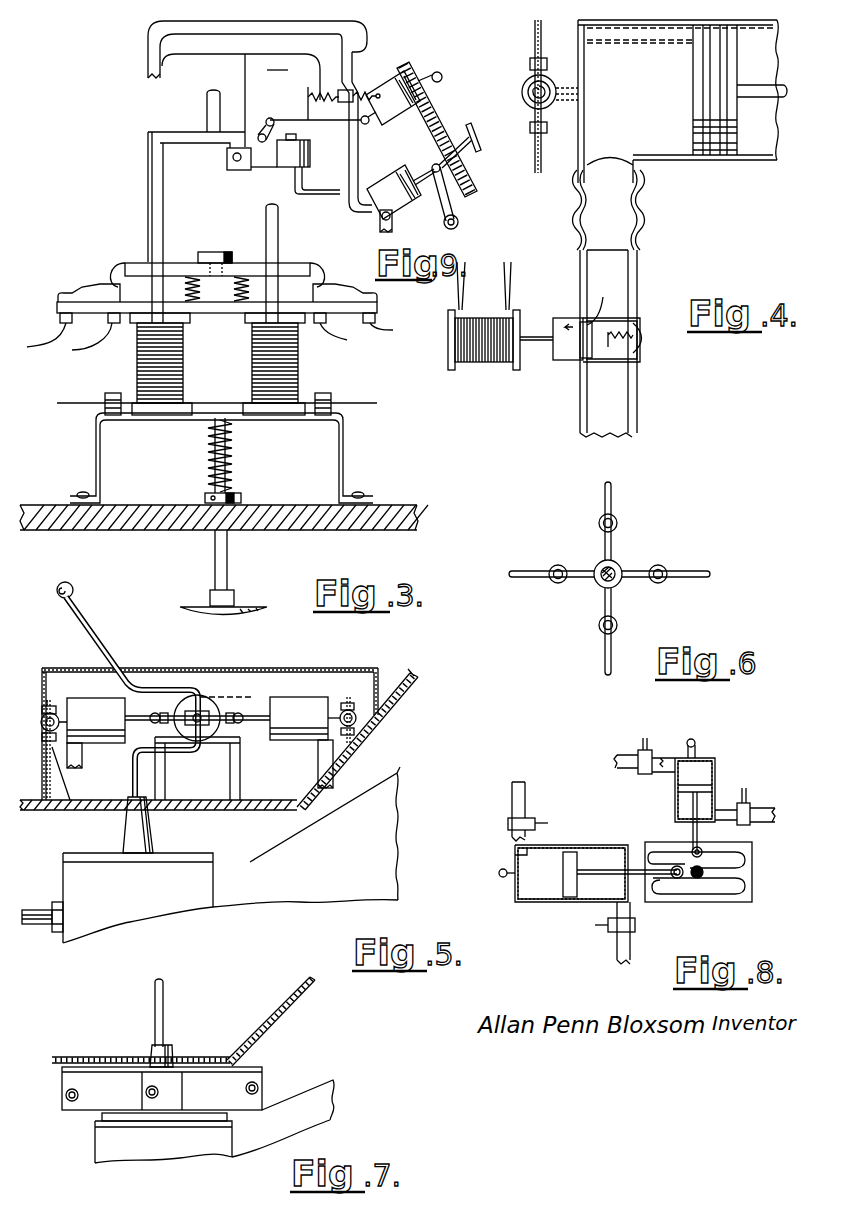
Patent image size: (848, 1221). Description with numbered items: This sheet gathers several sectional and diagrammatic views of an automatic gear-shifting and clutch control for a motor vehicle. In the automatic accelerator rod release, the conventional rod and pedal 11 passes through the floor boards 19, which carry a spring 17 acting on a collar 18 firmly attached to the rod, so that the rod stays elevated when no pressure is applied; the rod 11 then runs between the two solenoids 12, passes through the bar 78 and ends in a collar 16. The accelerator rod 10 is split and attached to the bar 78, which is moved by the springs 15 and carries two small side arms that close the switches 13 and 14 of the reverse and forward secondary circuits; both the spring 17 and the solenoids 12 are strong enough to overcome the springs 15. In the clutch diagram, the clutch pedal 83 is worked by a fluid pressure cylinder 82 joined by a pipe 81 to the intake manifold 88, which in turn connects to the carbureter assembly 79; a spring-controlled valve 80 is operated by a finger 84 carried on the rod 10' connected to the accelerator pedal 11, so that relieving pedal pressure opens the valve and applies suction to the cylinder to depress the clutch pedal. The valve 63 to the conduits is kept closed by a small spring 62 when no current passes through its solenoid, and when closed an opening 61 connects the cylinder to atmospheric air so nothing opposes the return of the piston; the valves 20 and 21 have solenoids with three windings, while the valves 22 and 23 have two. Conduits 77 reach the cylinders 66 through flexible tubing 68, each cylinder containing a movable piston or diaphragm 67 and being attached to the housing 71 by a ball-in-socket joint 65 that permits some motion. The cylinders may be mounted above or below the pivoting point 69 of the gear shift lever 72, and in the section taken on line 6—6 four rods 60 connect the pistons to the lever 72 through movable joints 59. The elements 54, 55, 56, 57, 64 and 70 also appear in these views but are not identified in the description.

In FIG. 5, the section line 6 is at (253, 697).
In FIG. 3, the accelerator rod 10 is at (190, 111).
In FIG. 9, the accelerator rod 10 is at (393, 98).
In FIG. 9, the rod 10' is at (317, 129).
In FIG. 3, the accelerator pedal 11 is at (228, 567).
In FIG. 9, the accelerator pedal 11 is at (420, 72).
In FIG. 3, the solenoid 12 is at (137, 365).
In FIG. 3, the switch 13 is at (99, 287).
In FIG. 3, the switch 14 is at (333, 287).
In FIG. 3, the spring 15 is at (186, 290).
In FIG. 3, the collar 16 is at (218, 253).
In FIG. 3, the spring 17 is at (233, 455).
In FIG. 3, the collar 18 is at (240, 495).
In FIG. 3, the floor boards 19 is at (418, 504).
In FIG. 5, the floor boards 19 is at (409, 685).
In FIG. 7, the floor boards 19 is at (183, 1021).
In FIG. 8, the valve 20 is at (527, 820).
In FIG. 8, the valve 21 is at (613, 935).
In FIG. 8, the valve 22 is at (750, 808).
In FIG. 8, the valve 23 is at (638, 755).
In FIG. 8, the cylinder 54 is at (563, 873).
In FIG. 5, the cylinder 54 is at (301, 742).
In FIG. 8, the cylinder 55 is at (695, 780).
In FIG. 8, the piston 56 is at (695, 821).
In FIG. 8, the piston 57 is at (620, 874).
In FIG. 5, the piston 57 is at (96, 733).
In FIG. 6, the movable joint 59 is at (620, 523).
In FIG. 6, the rod 60 is at (612, 493).
In FIG. 4, the opening 61 is at (567, 320).
In FIG. 4, the spring 62 is at (641, 340).
In FIG. 4, the valve 63 is at (592, 350).
In FIG. 4, the coil 64 is at (498, 370).
In FIG. 4, the joint 65 is at (556, 80).
In FIG. 5, the joint 65 is at (55, 710).
In FIG. 4, the cylinder 66 is at (660, 22).
In FIG. 4, the piston or diaphragm 67 is at (738, 82).
In FIG. 4, the flexible tubing 68 is at (640, 192).
In FIG. 5, the pivoting point 69 is at (128, 795).
In FIG. 7, the pivoting point 69 is at (173, 1048).
In FIG. 5, the base 70 is at (138, 898).
In FIG. 7, the base 70 is at (163, 1138).
In FIG. 4, the housing 71 is at (526, 96).
In FIG. 5, the housing 71 is at (271, 668).
In FIG. 7, the housing 71 is at (162, 1088).
In FIG. 6, the gear shift lever 72 is at (614, 569).
In FIG. 8, the gear shift lever 72 is at (698, 872).
In FIG. 5, the gear shift lever 72 is at (78, 606).
In FIG. 7, the gear shift lever 72 is at (165, 990).
In FIG. 4, the conduit 77 is at (637, 290).
In FIG. 3, the bar 78 is at (122, 263).
In FIG. 3, the carbureter assembly 79 is at (253, 172).
In FIG. 9, the valve 80 is at (359, 82).
In FIG. 5, the valve 80 is at (40, 930).
In FIG. 9, the pipe 81 is at (353, 143).
In FIG. 9, the fluid pressure cylinder 82 is at (403, 200).
In FIG. 9, the clutch pedal 83 is at (443, 199).
In FIG. 9, the finger 84 is at (308, 137).
In FIG. 9, the intake manifold 88 is at (287, 71).